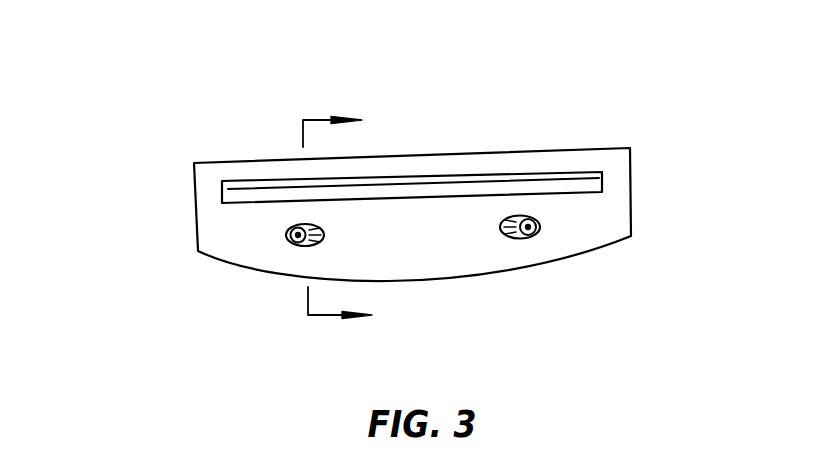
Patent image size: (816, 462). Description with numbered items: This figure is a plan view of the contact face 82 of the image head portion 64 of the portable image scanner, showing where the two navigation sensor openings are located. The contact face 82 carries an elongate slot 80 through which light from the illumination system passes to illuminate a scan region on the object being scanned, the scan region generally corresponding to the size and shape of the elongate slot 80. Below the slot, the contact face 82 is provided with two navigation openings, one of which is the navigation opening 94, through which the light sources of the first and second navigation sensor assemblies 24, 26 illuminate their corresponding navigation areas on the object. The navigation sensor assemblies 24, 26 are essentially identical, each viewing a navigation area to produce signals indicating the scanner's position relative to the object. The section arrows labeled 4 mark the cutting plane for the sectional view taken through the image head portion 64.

The image head portion 64 is at (144, 64).
The elongate slot 80 is at (508, 170).
The contact face 82 is at (432, 237).
The navigation opening 94 is at (323, 240).
The first navigation sensor assembly 24 is at (292, 243).
The second navigation sensor assembly 26 is at (537, 237).
The section line 4- 4 is at (351, 220).